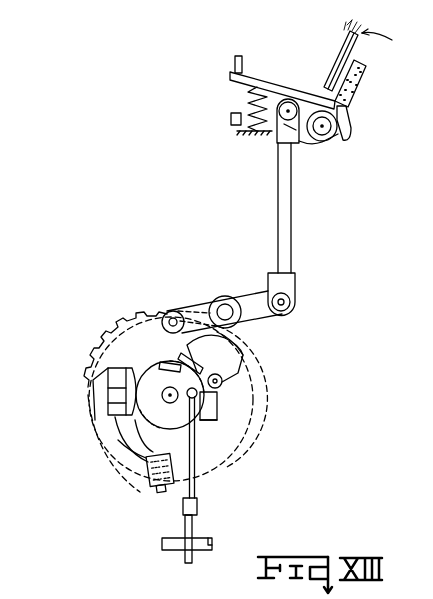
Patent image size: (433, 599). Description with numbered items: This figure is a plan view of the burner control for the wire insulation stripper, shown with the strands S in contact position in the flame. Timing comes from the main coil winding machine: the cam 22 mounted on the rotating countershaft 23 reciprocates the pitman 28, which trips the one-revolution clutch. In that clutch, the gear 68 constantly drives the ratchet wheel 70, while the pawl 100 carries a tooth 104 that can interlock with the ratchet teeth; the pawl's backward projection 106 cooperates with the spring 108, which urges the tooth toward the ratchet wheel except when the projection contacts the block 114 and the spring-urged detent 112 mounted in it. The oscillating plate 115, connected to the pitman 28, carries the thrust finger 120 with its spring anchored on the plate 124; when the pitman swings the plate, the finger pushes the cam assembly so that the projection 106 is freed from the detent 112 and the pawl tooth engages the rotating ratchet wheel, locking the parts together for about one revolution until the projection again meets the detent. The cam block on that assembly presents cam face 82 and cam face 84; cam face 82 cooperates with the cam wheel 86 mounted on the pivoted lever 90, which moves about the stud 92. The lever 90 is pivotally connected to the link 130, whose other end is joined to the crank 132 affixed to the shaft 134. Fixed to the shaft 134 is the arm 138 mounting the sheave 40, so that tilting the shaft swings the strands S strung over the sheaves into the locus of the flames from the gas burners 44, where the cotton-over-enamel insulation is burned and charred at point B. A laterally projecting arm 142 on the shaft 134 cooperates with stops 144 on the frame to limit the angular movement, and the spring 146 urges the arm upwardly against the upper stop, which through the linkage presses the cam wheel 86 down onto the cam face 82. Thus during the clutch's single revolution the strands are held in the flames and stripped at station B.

The laterally projecting arm 142 is at (264, 81).
The stops 144 is at (234, 62).
The spring 146 is at (250, 99).
The crank 132 is at (303, 145).
The shaft 134 is at (327, 137).
The gas burners 44 is at (349, 130).
The arm 138 is at (361, 70).
The sheave 40 is at (328, 85).
The strands S is at (348, 33).
The point B is at (377, 40).
The link 130 is at (291, 228).
The pivoted lever 90 is at (203, 307).
The cam wheel 86 is at (172, 311).
The stud 92 is at (227, 303).
The tooth 104 is at (233, 327).
The pawl 100 is at (243, 351).
The thrust finger 120 is at (210, 359).
The plate 124 is at (168, 362).
The gear 68 is at (107, 342).
The cam face 82 is at (102, 383).
The cam face 84 is at (130, 412).
The ratchet wheel 70 is at (127, 475).
The oscillating plate 115 is at (122, 450).
The block 114 is at (158, 493).
The backward projection 106 is at (223, 400).
The spring 108 is at (218, 413).
The spring-urged detent 112 is at (189, 447).
The pitman 28 is at (197, 490).
The cam 22 is at (192, 528).
The countershaft 23 is at (207, 540).